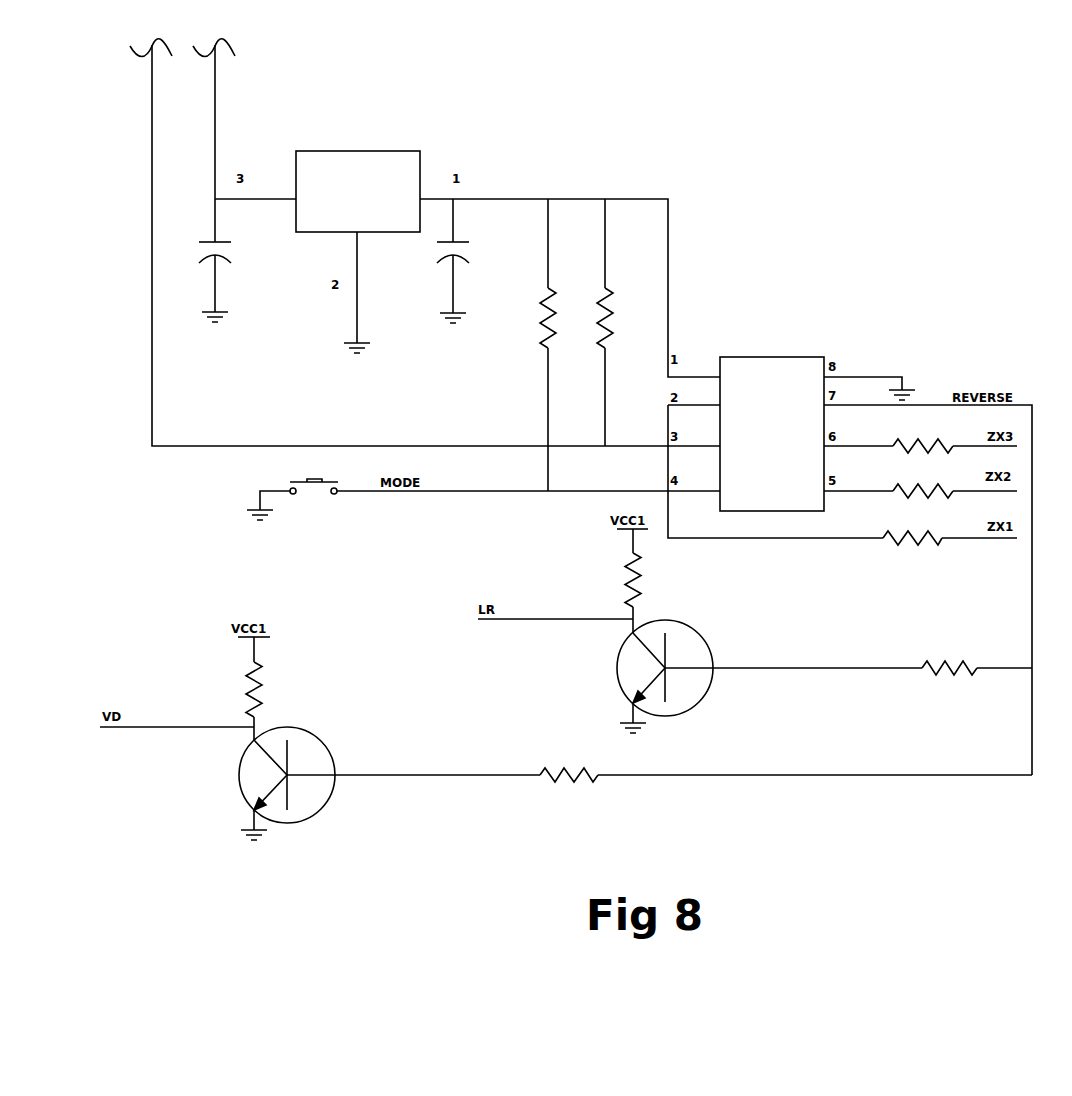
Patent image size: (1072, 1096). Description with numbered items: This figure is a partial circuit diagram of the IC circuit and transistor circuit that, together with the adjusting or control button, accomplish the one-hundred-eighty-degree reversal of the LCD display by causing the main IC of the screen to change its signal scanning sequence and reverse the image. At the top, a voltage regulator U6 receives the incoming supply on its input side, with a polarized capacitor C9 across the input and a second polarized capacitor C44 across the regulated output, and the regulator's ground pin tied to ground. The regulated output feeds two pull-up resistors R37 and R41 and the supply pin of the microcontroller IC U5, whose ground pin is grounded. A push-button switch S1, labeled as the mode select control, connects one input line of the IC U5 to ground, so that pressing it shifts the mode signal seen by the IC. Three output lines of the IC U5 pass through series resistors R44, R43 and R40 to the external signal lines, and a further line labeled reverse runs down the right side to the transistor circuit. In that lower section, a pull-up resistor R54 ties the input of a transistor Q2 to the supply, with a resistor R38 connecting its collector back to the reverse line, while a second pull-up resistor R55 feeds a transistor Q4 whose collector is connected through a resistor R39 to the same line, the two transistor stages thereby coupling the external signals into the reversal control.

The 7805 voltage regulator U6 is at (355, 225).
The input capacitor 19uF/16V/NU C9 is at (230, 285).
The output capacitor 10uF/16V C44 is at (459, 285).
The pull-up resistor 10K R37 is at (563, 318).
The pull-up resistor 10K R41 is at (622, 318).
The PIC12C508 microcontroller U5 is at (772, 436).
The mode select switch S1 is at (294, 521).
The resistor 10K to ZX3 R44 is at (936, 449).
The resistor 10K to ZX2 R43 is at (930, 494).
The resistor 10K to ZX1 R40 is at (890, 541).
The pull-up resistor 10K R54 is at (645, 581).
The 2N3904 transistor Q2 is at (693, 674).
The resistor 10K R38 is at (931, 671).
The pull-up resistor 10K R55 is at (266, 688).
The 2N3904 transistor Q4 is at (315, 781).
The resistor 10K R39 is at (550, 779).